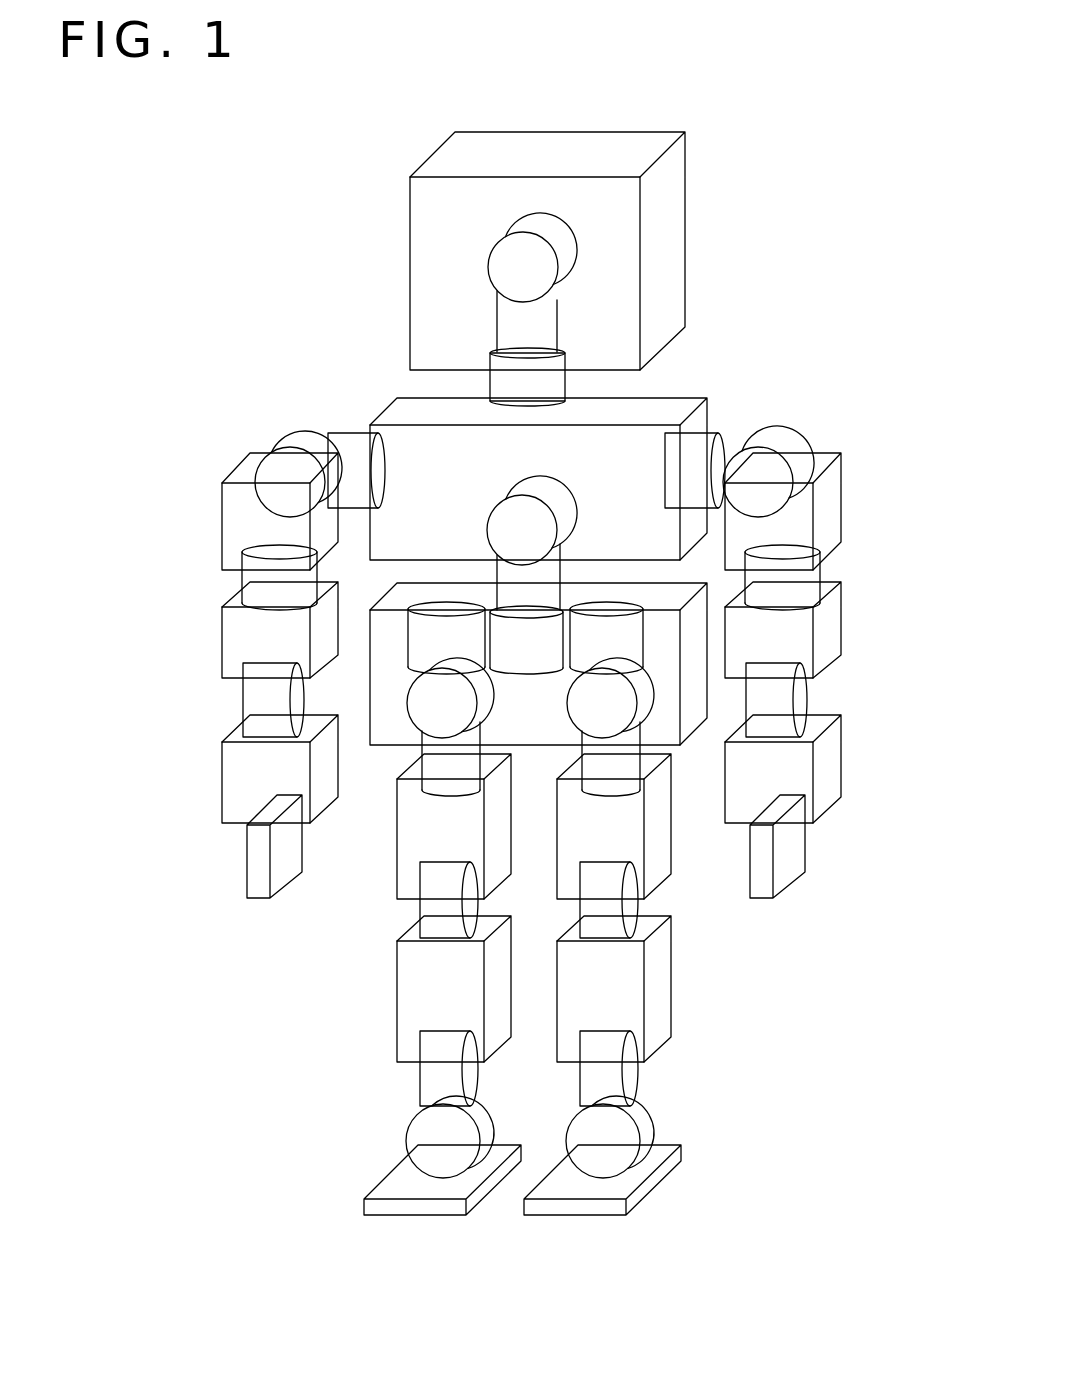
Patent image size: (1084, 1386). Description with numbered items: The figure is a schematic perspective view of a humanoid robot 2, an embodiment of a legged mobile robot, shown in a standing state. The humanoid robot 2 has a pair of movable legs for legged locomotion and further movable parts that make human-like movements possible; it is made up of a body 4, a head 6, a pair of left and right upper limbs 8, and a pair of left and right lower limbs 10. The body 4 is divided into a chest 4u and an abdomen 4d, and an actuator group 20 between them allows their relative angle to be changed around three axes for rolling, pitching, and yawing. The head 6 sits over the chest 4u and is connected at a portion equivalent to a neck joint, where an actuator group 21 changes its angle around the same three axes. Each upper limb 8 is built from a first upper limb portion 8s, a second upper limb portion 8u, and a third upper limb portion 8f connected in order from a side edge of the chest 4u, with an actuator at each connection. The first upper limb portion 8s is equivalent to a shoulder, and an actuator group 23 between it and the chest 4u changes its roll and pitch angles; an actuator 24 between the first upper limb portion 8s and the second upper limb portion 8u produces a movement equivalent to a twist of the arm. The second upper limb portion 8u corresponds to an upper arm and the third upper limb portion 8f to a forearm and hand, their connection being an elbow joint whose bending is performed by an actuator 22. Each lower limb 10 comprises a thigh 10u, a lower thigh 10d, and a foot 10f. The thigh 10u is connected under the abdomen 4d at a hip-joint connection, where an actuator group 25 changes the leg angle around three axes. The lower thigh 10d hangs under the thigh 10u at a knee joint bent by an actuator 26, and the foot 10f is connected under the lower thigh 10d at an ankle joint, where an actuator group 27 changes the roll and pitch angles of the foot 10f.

The humanoid robot 2 is at (297, 156).
The body 4 is at (703, 379).
The chest 4u is at (397, 413).
The abdomen 4d is at (383, 730).
The head 6 is at (665, 213).
The upper limb 8 is at (199, 439).
The first upper limb portion 8s is at (238, 514).
The second upper limb portion 8u is at (238, 637).
The third upper limb portion 8f is at (240, 778).
The lower limb 10 is at (278, 987).
The thigh 10u is at (417, 845).
The lower thigh 10d is at (417, 988).
The foot 10f is at (373, 1202).
The actuator group 20 is at (580, 503).
The actuator group 21 is at (473, 250).
The actuator 22 is at (245, 692).
The actuator group 23 is at (269, 419).
The actuator 24 is at (250, 577).
The actuator group 25 is at (392, 628).
The actuator 26 is at (429, 889).
The actuator group 27 is at (388, 1085).